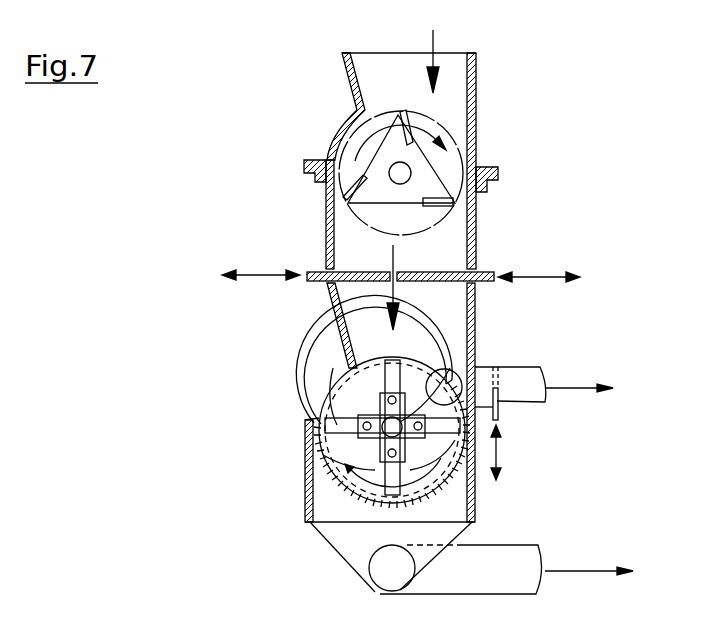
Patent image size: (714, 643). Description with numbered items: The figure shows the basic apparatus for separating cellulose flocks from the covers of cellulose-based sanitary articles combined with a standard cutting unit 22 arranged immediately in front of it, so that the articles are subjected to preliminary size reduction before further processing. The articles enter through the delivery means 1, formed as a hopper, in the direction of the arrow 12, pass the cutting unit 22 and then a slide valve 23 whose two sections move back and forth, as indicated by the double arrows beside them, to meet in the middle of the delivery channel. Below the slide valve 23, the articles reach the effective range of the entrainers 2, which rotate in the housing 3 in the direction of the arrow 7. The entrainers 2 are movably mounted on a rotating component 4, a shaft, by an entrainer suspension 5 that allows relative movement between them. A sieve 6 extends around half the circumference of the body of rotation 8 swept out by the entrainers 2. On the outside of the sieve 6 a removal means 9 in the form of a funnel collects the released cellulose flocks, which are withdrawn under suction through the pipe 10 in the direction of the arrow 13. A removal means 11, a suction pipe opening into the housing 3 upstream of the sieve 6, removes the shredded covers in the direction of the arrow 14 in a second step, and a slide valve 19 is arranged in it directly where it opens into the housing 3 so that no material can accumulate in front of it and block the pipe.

The delivery means 1 is at (450, 308).
The entrainers 2 is at (345, 385).
The housing 3 is at (307, 465).
The rotating component 4 is at (497, 483).
The entrainer suspension 5 is at (347, 447).
The sieve 6 is at (350, 490).
The arrow 7 is at (447, 487).
The body of rotation 8 is at (422, 372).
The removal means 9 is at (340, 552).
The pipe 10 is at (480, 557).
The removal means 11 is at (540, 367).
The arrow 12 is at (440, 43).
The arrow 13 is at (593, 568).
The arrow 14 is at (578, 390).
The slide valve 19 is at (545, 402).
The cutting unit 22 is at (453, 153).
The slide valve 23 is at (482, 271).